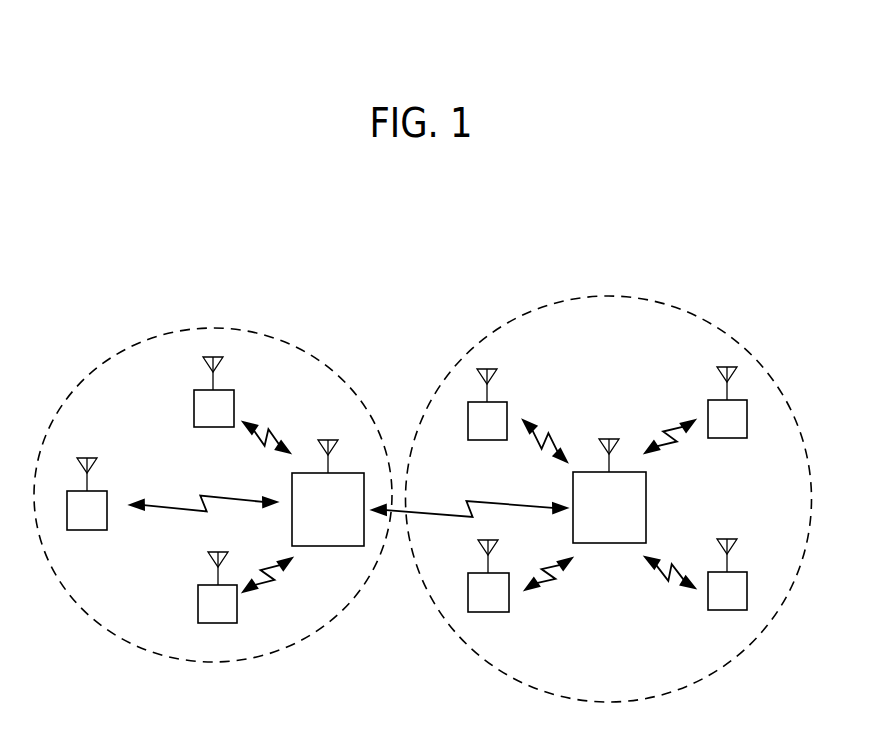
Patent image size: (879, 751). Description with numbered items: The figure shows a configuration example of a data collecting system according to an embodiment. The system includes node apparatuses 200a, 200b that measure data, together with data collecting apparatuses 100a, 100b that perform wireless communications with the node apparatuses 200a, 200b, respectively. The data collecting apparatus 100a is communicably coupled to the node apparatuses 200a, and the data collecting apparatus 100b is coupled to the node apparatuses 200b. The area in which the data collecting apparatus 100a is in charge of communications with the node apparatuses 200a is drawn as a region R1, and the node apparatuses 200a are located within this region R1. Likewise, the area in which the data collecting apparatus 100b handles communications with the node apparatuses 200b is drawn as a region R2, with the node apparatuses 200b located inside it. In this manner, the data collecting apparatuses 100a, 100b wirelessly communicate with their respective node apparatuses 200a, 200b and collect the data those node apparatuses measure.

The region R1 is at (215, 327).
The region R2 is at (610, 295).
The data collecting apparatus 100a is at (331, 547).
The data collecting apparatus 100b is at (611, 544).
The node apparatus 200a is at (194, 403).
The node apparatus 200b is at (508, 412).